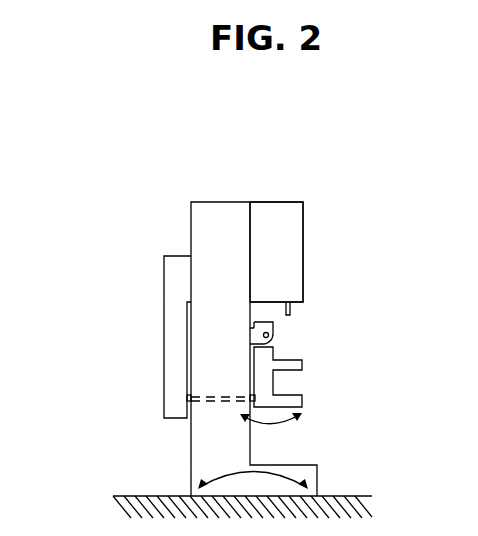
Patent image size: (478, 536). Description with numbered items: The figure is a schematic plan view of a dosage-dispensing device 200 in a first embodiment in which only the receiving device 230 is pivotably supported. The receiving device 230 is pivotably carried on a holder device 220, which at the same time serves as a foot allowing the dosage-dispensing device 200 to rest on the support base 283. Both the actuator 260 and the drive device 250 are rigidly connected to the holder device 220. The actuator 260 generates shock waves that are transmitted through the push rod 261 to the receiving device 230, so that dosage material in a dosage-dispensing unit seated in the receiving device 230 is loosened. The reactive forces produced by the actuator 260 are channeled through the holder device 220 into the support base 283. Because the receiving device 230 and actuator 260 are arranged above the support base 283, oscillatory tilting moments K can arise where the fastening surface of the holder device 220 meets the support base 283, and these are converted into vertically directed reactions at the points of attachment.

The dosage-dispensing device 200 is at (323, 180).
The holder device 220 is at (210, 231).
The drive device 250 is at (278, 252).
The actuator 260 is at (177, 290).
The push rod 261 is at (213, 398).
The receiving device 230 is at (268, 363).
The support base 283 is at (347, 501).